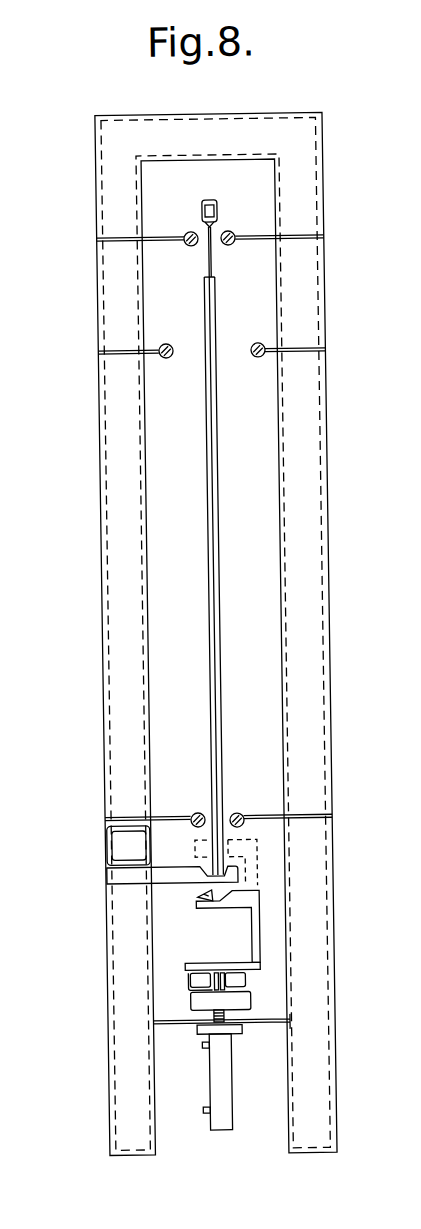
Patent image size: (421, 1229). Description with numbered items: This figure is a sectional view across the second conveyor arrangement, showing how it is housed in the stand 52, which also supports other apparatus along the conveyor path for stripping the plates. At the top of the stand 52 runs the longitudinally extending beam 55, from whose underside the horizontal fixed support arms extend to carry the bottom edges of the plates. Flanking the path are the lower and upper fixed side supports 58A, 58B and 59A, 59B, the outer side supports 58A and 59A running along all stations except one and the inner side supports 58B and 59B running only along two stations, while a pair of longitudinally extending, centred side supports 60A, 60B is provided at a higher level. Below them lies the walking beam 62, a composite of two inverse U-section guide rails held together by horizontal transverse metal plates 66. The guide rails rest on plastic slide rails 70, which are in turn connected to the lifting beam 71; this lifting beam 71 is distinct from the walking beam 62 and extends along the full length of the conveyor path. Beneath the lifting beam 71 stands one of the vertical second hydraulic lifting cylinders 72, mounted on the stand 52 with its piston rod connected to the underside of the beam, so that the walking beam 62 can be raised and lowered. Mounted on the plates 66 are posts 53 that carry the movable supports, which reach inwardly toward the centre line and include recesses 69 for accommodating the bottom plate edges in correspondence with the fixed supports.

The stand 52 is at (106, 930).
The posts 53 is at (253, 928).
The longitudinally extending beam 55 is at (104, 838).
The lower outer fixed side support 58A is at (195, 813).
The lower inner fixed side support 58B is at (235, 813).
The upper outer fixed side support 59A is at (170, 343).
The upper inner fixed side support 59B is at (263, 345).
The centred side support 60A is at (192, 234).
The centred side support 60B is at (238, 234).
The walking beam 62 is at (177, 983).
The horizontal transverse metal plates 66 is at (192, 965).
The recesses 69 is at (194, 902).
The plastic slide rails 70 is at (197, 983).
The lifting beam 71 is at (242, 1000).
The second hydraulic lifting cylinders 72 is at (215, 1122).